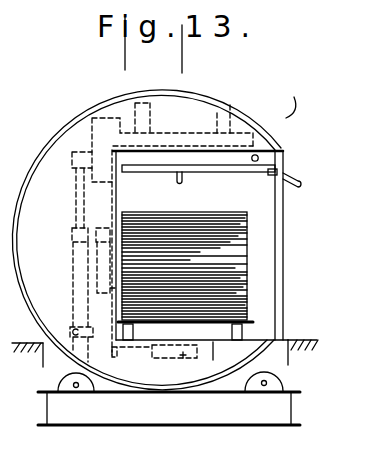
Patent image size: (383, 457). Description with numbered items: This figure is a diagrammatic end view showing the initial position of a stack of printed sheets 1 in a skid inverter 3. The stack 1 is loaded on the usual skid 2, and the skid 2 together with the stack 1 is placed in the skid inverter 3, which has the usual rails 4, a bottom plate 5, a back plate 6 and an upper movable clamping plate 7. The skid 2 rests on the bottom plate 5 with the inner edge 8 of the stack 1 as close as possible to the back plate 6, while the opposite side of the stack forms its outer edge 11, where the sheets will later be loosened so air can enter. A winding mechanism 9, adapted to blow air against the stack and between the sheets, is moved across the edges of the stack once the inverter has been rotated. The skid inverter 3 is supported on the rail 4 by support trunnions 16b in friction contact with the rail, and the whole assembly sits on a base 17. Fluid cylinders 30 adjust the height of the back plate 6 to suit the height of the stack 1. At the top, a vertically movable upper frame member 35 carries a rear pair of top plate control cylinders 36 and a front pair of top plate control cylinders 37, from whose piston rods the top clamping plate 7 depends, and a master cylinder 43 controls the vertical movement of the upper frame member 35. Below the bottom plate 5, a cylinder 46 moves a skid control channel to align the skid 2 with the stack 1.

The stack of printed sheets 1 is at (268, 247).
The skid 2 is at (245, 331).
The skid inverter 3 is at (283, 116).
The rails 4 is at (203, 99).
The bottom plate 5 is at (221, 357).
The back plate 6 is at (113, 208).
The upper movable clamping plate 7 is at (197, 147).
The inner edge 8 is at (125, 268).
The winding mechanism 9 is at (238, 164).
The outer edge 11 is at (251, 285).
The support trunnions 16b is at (60, 382).
The rail beam 17 is at (281, 408).
The fluid cylinders 30 is at (74, 241).
The upper frame member 35 is at (168, 132).
The rear pair of top plate control cylinders 36 is at (132, 108).
The front pair of top plate control cylinders 37 is at (231, 117).
The master cylinder 43 is at (74, 265).
The cylinder 46 is at (183, 360).